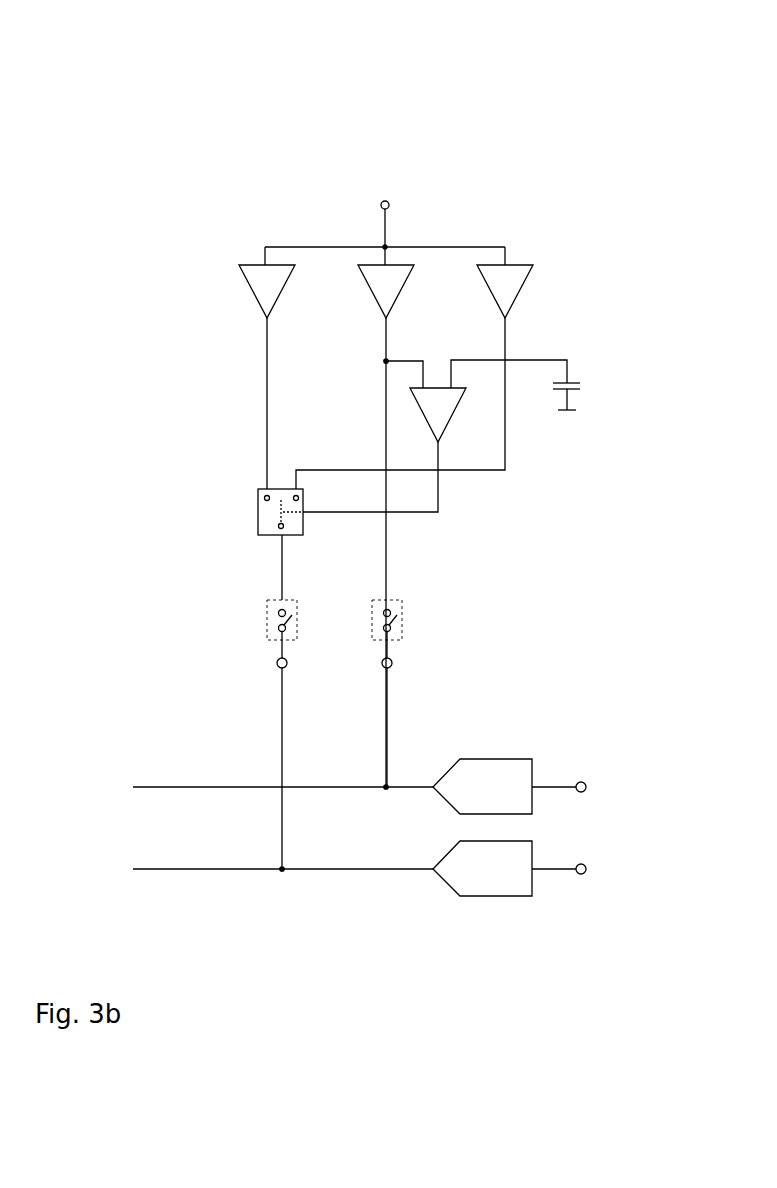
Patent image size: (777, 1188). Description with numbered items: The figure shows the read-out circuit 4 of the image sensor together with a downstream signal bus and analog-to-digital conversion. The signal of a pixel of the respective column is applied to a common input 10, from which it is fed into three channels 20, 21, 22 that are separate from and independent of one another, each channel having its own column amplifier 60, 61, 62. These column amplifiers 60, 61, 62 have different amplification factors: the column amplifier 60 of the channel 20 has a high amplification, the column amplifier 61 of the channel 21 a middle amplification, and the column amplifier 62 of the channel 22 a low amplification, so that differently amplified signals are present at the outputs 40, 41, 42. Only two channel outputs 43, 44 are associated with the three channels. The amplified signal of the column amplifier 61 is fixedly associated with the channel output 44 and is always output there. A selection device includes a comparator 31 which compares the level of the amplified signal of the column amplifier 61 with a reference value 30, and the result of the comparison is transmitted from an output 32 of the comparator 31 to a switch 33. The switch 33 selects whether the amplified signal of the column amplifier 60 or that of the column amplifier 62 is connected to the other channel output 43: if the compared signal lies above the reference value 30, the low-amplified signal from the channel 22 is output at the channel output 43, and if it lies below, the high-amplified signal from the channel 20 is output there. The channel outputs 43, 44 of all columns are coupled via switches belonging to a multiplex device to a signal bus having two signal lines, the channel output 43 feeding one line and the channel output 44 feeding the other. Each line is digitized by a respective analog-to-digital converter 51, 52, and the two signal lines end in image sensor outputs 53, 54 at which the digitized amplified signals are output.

The read-out circuit 4 is at (561, 100).
The common input 10 is at (376, 190).
The channel 20 is at (227, 181).
The channel 21 is at (446, 192).
The channel 22 is at (558, 203).
The reference value 30 is at (588, 396).
The comparator 31 is at (466, 422).
The output 32 is at (449, 501).
The switch 33 is at (244, 512).
The output 40 is at (253, 367).
The output 41 is at (367, 381).
The output 42 is at (519, 469).
The channel output 43 is at (258, 660).
The channel output 44 is at (411, 666).
The analog-to-digital converter 51 is at (423, 797).
The analog-to-digital converter 52 is at (423, 878).
The image sensor output 53 is at (599, 779).
The image sensor output 54 is at (599, 861).
The column amplifier 60 is at (239, 292).
The column amplifier 61 is at (414, 304).
The column amplifier 62 is at (536, 294).